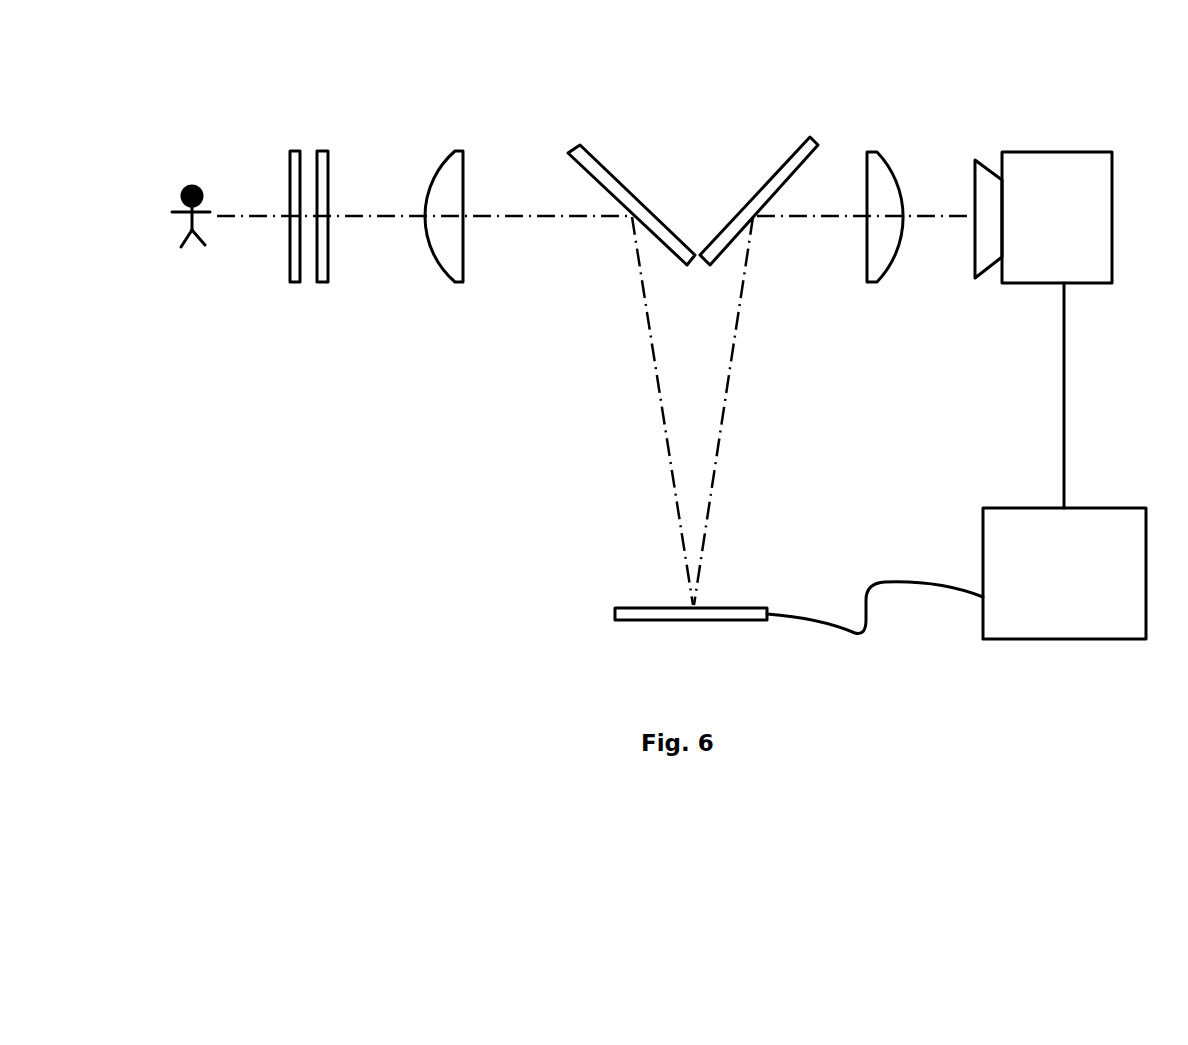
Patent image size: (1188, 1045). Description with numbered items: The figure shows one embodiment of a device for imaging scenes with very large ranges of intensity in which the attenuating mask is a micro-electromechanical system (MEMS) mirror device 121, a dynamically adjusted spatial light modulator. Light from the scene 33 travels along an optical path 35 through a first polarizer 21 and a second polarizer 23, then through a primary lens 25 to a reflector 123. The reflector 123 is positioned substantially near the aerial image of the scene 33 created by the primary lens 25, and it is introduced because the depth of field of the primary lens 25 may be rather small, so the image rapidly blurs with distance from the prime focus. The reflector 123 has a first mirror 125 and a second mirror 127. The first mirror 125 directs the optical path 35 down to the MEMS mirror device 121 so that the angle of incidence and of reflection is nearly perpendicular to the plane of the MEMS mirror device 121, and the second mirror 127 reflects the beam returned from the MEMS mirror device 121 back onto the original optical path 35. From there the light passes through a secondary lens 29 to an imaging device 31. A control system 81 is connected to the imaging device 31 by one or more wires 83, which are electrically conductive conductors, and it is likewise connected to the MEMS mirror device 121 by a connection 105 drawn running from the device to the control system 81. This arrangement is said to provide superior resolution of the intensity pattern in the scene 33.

The first polarizer 21 is at (298, 148).
The second polarizer 23 is at (323, 148).
The primary lens 25 is at (453, 148).
The secondary lens 29 is at (877, 150).
The imaging device 31 is at (1058, 152).
The scene 33 is at (185, 236).
The optical path 35 is at (222, 217).
The control system 81 is at (1094, 639).
The wires 83 is at (1067, 417).
The cable 105 is at (863, 635).
The MEMS mirror device 121 is at (745, 608).
The reflector 123 is at (677, 176).
The first mirror 125 is at (582, 170).
The second mirror 127 is at (775, 201).